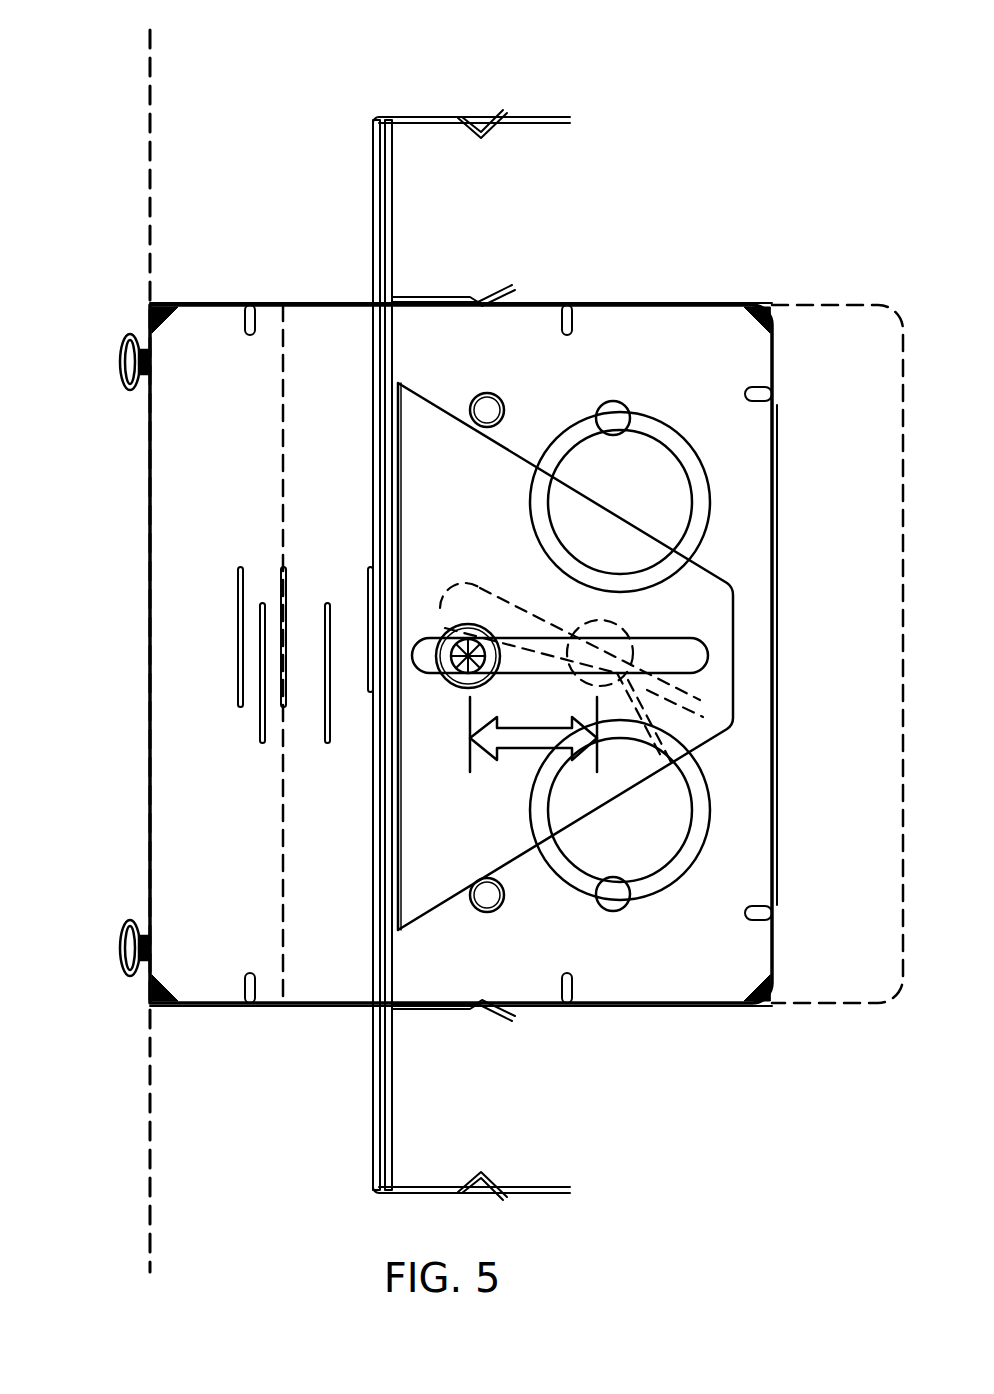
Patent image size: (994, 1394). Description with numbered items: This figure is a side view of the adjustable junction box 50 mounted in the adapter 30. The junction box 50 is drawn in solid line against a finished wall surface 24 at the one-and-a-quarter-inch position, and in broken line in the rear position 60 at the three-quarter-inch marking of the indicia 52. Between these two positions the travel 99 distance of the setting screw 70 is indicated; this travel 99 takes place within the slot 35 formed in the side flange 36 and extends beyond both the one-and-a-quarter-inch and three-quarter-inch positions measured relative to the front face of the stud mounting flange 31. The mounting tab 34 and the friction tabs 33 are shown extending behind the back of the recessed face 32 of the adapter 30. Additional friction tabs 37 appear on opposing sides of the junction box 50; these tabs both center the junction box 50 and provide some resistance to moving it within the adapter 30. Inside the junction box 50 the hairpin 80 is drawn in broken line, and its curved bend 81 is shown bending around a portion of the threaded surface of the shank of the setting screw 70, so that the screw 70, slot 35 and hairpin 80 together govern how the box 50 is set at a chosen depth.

The finished wall surface 24 is at (150, 180).
The adapter 30 is at (430, 616).
The stud mounting flange 31 is at (372, 205).
The recessed face 32 is at (394, 163).
The friction tabs 33 is at (493, 127).
The mounting tab 34 is at (540, 118).
The slot 35 is at (697, 637).
The side flange 36 is at (705, 743).
The friction tabs 37 is at (466, 295).
The adjustable junction box 50 is at (128, 467).
The indicia 52 is at (237, 663).
The rear position 60 is at (282, 325).
The setting screw 70 is at (452, 680).
The hairpin 80 is at (690, 697).
The curved bend 81 is at (595, 673).
The travel 99 is at (532, 748).